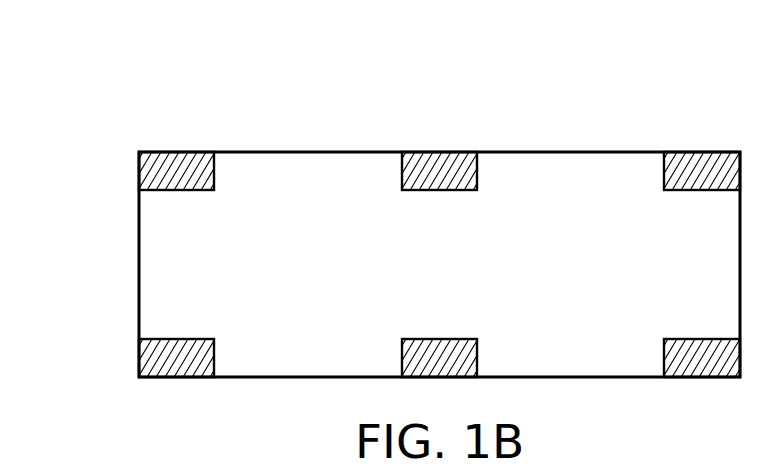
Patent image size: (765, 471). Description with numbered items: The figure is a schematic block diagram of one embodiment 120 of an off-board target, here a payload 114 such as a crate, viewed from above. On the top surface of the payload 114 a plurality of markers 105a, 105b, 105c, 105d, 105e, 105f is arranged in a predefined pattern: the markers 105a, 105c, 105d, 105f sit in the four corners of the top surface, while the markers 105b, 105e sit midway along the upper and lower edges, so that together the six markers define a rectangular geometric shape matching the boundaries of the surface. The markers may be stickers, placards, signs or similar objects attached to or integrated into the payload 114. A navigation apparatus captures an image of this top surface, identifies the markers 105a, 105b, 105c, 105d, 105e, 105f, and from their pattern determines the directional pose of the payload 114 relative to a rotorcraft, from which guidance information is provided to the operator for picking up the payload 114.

The embodiment of an off-board target 120 is at (73, 78).
The payload 114 is at (461, 275).
The marker 105a is at (139, 184).
The marker 105b is at (402, 184).
The marker 105c is at (664, 185).
The marker 105d is at (139, 373).
The marker 105e is at (402, 373).
The marker 105f is at (664, 373).